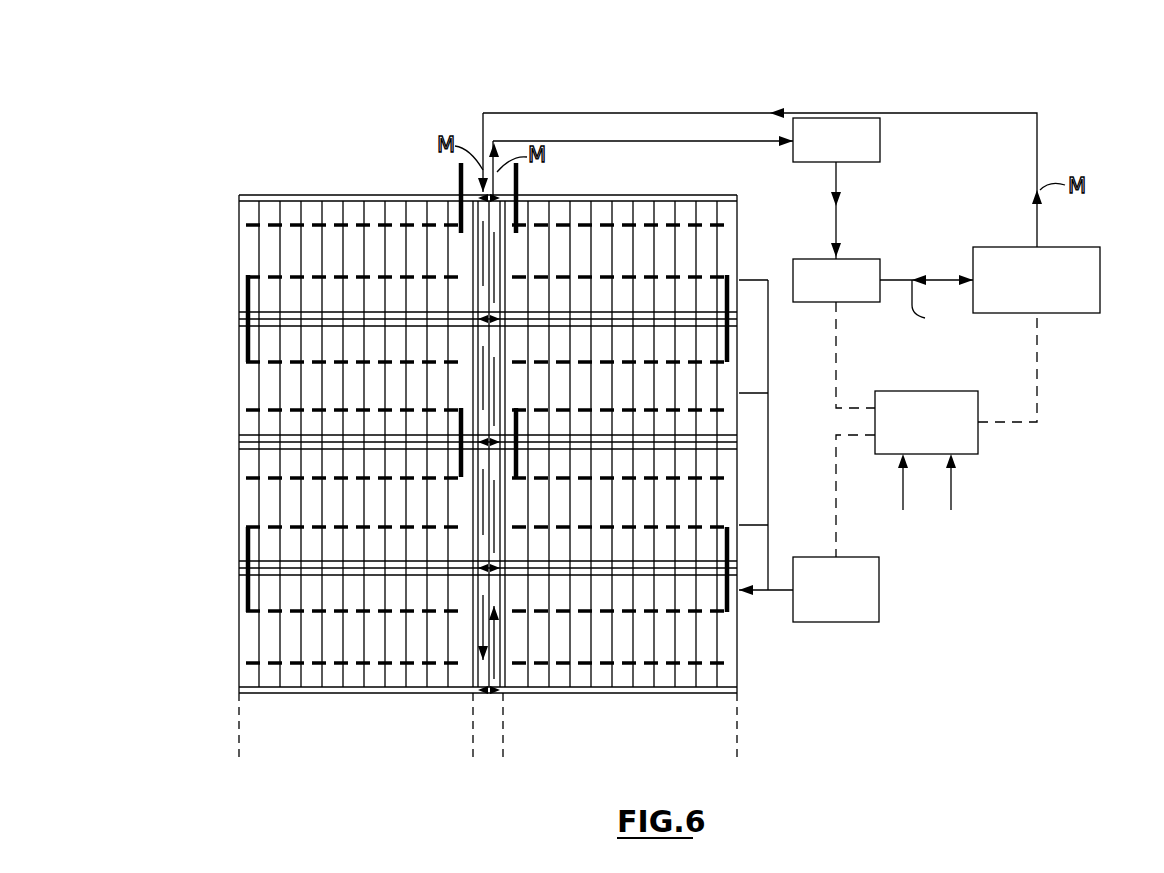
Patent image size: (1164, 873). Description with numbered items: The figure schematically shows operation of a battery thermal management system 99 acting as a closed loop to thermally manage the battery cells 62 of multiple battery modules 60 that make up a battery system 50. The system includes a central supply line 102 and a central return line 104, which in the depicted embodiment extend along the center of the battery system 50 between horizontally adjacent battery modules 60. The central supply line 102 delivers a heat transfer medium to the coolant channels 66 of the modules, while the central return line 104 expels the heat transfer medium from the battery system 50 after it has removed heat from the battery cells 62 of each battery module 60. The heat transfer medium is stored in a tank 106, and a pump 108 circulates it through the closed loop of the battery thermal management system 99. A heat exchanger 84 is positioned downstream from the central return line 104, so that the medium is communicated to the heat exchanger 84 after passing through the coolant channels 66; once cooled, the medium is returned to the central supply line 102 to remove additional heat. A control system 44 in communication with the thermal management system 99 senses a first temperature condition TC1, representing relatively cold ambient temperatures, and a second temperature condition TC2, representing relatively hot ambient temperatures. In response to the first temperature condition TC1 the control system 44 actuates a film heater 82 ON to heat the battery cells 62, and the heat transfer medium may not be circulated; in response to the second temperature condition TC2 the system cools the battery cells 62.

The battery system 50 is at (488, 421).
The battery module 60 is at (233, 258).
The battery cell 62 is at (276, 210).
The coolant channel 66 is at (343, 200).
The battery thermal management system 99 is at (772, 92).
The central supply line 102 is at (459, 193).
The central return line 104 is at (518, 193).
The tank 106 is at (881, 148).
The pump 108 is at (881, 270).
The heat exchanger 84 is at (1100, 275).
The control system 44 is at (979, 443).
The film heater 82 is at (880, 590).
The first temperature condition TC1 is at (903, 495).
The second temperature condition TC2 is at (951, 480).